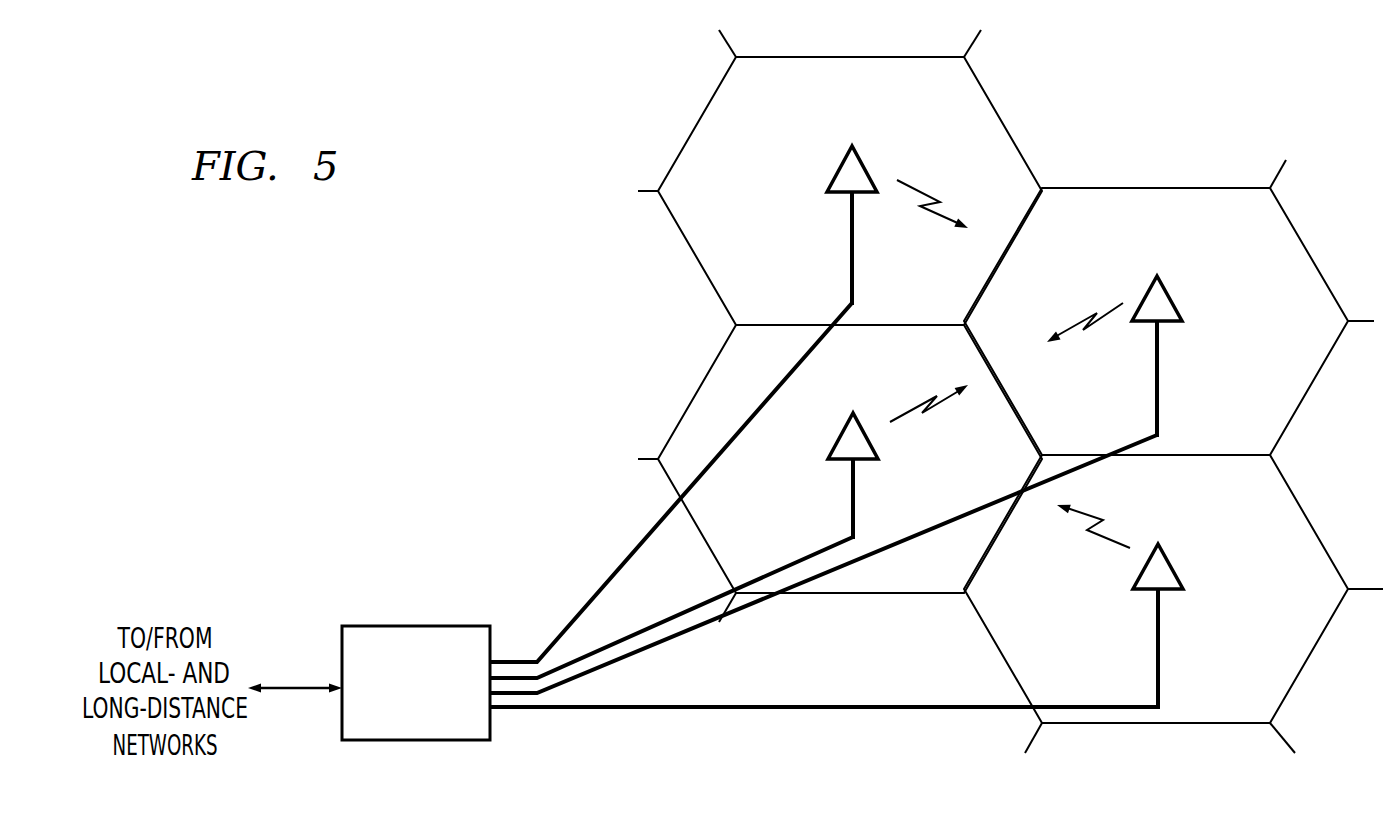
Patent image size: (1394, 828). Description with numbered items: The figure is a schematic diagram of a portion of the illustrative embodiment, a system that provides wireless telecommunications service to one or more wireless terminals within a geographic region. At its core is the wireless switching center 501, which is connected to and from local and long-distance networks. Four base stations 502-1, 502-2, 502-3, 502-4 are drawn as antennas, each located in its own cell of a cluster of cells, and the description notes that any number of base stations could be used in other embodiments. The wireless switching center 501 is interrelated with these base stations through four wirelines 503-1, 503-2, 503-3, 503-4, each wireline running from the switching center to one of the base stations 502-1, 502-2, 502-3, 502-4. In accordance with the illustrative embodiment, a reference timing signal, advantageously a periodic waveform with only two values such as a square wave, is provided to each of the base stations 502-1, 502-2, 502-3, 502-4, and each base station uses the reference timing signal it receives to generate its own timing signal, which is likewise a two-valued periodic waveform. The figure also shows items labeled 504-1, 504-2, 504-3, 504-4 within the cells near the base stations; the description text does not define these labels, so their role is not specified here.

The wireless switching center 501 is at (388, 625).
The base station 502-1 is at (852, 228).
The base station 502-2 is at (853, 487).
The base station 502-3 is at (1160, 362).
The base station 502-4 is at (1160, 643).
The wireline 503-1 is at (605, 580).
The wireline 503-2 is at (690, 606).
The wireline 503-3 is at (673, 638).
The wireline 503-4 is at (800, 712).
The wireless signal path in cell 504-1 is at (918, 186).
The wireless signal path in cell 504-2 is at (938, 410).
The wireless signal path in cell 504-3 is at (1115, 303).
The wireless signal path in cell 504-4 is at (1100, 540).